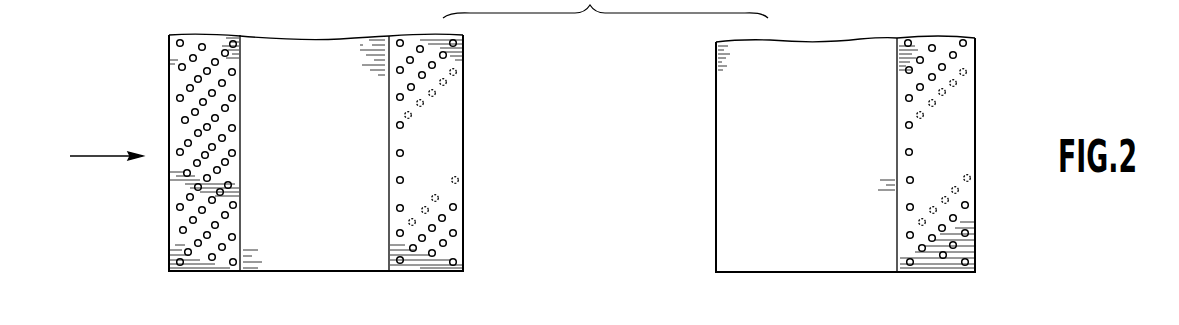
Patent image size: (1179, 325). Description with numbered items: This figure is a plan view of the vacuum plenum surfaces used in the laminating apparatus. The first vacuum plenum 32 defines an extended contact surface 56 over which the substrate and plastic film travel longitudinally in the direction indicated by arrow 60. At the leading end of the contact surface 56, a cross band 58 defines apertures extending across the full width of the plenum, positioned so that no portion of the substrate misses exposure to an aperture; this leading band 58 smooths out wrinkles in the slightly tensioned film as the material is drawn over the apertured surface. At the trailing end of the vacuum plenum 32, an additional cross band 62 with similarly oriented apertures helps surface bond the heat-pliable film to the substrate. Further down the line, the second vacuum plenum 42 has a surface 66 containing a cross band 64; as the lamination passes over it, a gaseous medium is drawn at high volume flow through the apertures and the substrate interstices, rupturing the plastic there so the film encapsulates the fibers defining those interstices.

The vacuum plenum 32 is at (161, 238).
The vacuum plenum 42 is at (716, 240).
The extended contact surface 56 is at (342, 257).
The cross band 58 is at (228, 145).
The arrow 60 is at (102, 156).
The cross band 62 is at (445, 95).
The cross band 64 is at (963, 215).
The surface 66 is at (812, 232).